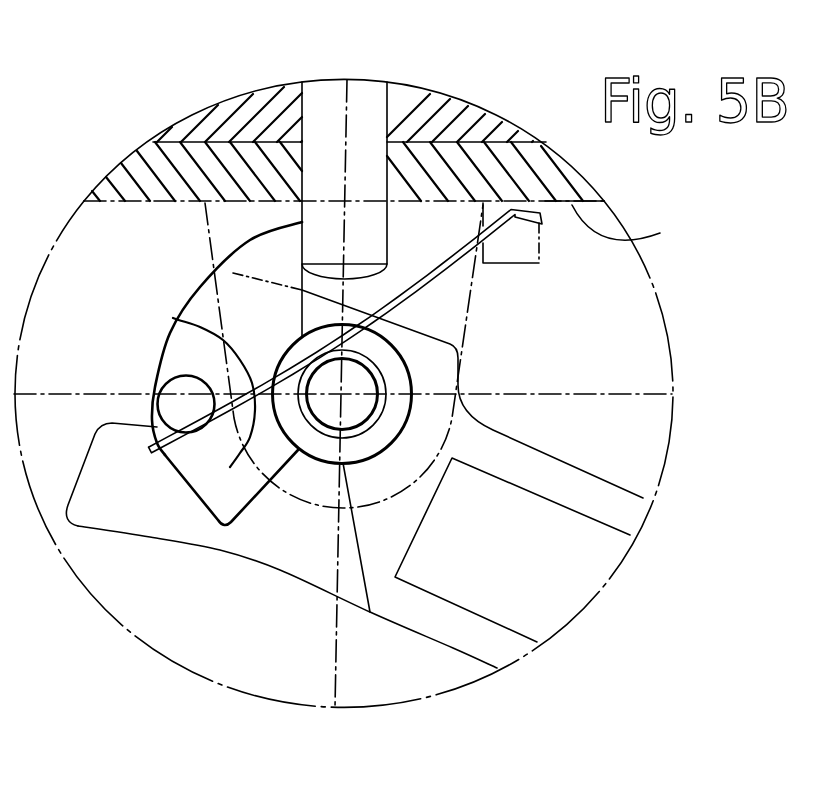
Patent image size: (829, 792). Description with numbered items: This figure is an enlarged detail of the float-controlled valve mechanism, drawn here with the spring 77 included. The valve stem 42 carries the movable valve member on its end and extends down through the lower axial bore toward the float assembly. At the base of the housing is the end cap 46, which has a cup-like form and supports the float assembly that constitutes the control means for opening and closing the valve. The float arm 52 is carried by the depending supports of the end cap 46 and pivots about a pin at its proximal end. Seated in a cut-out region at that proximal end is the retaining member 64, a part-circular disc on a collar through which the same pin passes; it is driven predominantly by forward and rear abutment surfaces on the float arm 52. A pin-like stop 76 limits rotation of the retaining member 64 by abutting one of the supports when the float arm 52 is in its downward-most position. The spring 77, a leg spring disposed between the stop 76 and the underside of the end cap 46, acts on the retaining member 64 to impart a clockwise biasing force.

The valve stem 42 is at (368, 140).
The end cap 46 is at (401, 171).
The float arm 52 is at (527, 595).
The retaining member 64 is at (208, 470).
The pin-like stop 76 is at (173, 398).
The spring 77 is at (173, 318).